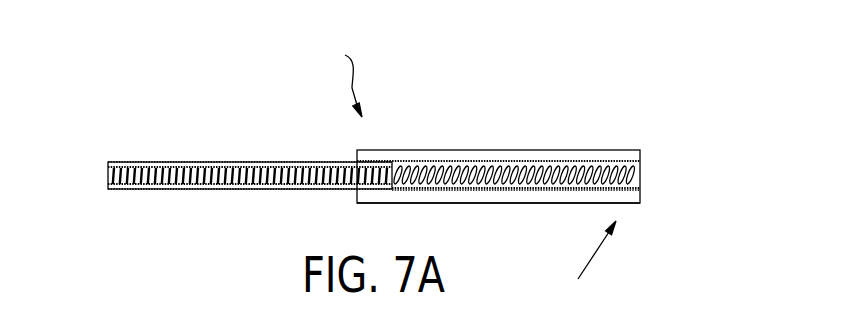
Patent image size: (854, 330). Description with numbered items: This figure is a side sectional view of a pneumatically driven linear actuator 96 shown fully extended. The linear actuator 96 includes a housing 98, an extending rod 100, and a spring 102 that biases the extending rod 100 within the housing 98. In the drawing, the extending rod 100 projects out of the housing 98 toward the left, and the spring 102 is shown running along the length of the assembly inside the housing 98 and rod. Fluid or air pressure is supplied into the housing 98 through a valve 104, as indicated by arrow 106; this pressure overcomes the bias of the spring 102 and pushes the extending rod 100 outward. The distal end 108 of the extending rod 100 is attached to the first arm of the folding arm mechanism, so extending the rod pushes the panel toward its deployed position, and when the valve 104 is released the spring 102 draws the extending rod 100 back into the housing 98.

The pneumatically driven linear actuator 96 is at (342, 80).
The housing 98 is at (541, 156).
The extending rod 100 is at (259, 161).
The spring 102 is at (307, 174).
The valve 104 is at (630, 194).
The arrow 106 is at (603, 267).
The distal end 108 is at (108, 174).